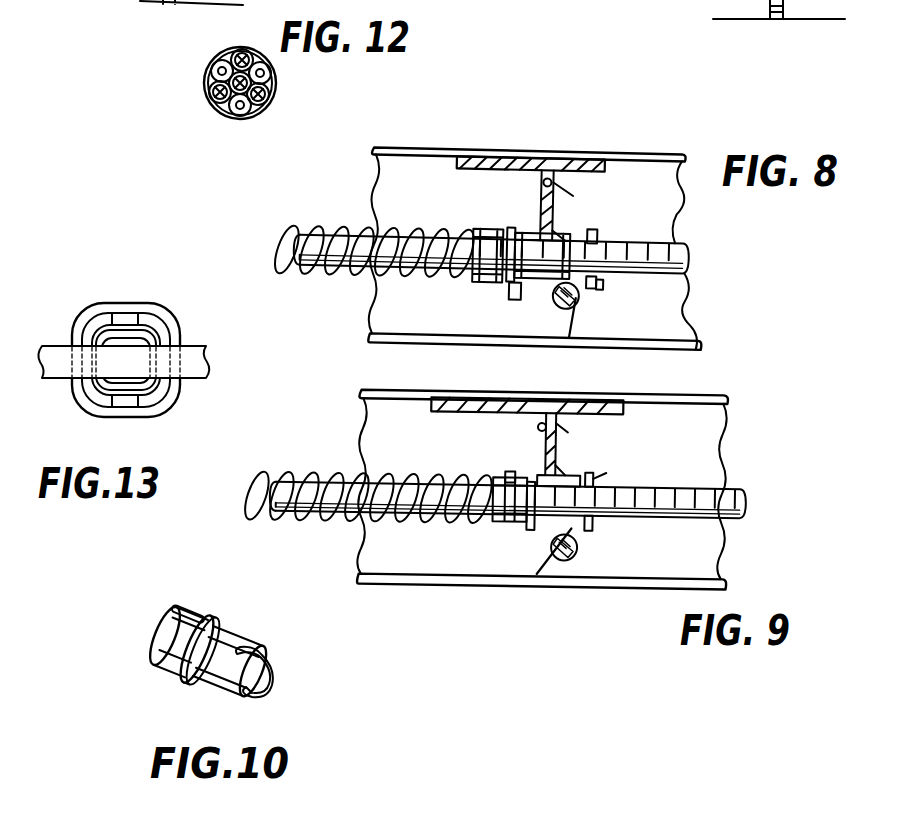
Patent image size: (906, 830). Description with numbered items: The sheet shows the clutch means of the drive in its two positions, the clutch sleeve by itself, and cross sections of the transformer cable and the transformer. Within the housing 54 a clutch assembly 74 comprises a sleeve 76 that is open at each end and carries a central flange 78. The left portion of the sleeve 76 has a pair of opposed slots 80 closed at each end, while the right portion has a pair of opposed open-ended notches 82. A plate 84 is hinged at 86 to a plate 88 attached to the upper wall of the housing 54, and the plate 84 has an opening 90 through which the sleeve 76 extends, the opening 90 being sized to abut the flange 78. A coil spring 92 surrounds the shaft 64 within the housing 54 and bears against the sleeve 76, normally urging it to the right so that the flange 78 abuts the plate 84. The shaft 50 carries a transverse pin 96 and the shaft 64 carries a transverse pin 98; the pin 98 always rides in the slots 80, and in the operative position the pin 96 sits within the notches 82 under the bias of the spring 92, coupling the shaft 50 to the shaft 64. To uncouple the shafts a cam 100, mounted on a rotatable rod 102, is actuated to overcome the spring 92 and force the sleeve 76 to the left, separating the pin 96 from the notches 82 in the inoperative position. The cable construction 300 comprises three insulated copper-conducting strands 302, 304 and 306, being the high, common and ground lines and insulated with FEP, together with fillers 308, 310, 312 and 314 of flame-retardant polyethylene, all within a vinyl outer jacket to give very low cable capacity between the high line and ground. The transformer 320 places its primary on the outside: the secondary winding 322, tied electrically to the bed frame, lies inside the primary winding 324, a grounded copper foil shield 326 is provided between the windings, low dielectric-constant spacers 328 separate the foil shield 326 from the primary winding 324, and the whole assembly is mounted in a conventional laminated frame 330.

In FIG. 8, the shaft 50 is at (653, 249).
In FIG. 9, the shaft 50 is at (678, 488).
In FIG. 8, the housing 54 is at (472, 152).
In FIG. 9, the housing 54 is at (652, 395).
In FIG. 8, the shaft 64 is at (439, 240).
In FIG. 9, the shaft 64 is at (422, 483).
In FIG. 8, the clutch assembly 74 is at (577, 213).
In FIG. 8, the sleeve 76 is at (568, 233).
In FIG. 10, the sleeve 76 is at (245, 632).
In FIG. 8, the central flange 78 is at (511, 228).
In FIG. 9, the central flange 78 is at (530, 532).
In FIG. 10, the central flange 78 is at (222, 620).
In FIG. 8, the opposed slots 80 is at (495, 215).
In FIG. 9, the opposed slots 80 is at (505, 526).
In FIG. 10, the opposed slots 80 is at (192, 606).
In FIG. 8, the open-ended notches 82 is at (597, 235).
In FIG. 9, the open-ended notches 82 is at (588, 472).
In FIG. 10, the open-ended notches 82 is at (260, 655).
In FIG. 8, the plate 84 is at (557, 202).
In FIG. 9, the plate 84 is at (560, 445).
In FIG. 8, the hinge 86 is at (546, 178).
In FIG. 9, the hinge 86 is at (545, 423).
In FIG. 8, the plate 88 is at (540, 158).
In FIG. 9, the plate 88 is at (540, 400).
In FIG. 8, the opening 90 is at (542, 182).
In FIG. 9, the opening 90 is at (559, 450).
In FIG. 8, the coil spring 92 is at (350, 229).
In FIG. 9, the coil spring 92 is at (394, 483).
In FIG. 8, the transverse pin 96 is at (604, 286).
In FIG. 9, the transverse pin 96 is at (595, 480).
In FIG. 8, the transverse pin 98 is at (514, 300).
In FIG. 9, the transverse pin 98 is at (510, 473).
In FIG. 8, the cam 100 is at (556, 306).
In FIG. 9, the cam 100 is at (570, 561).
In FIG. 8, the rod 102 is at (574, 320).
In FIG. 9, the rod 102 is at (548, 553).
In FIG. 12, the cable construction 300 is at (280, 73).
In FIG. 12, the insulated copper-conducting strand 302 is at (271, 84).
In FIG. 12, the insulated copper-conducting strand 304 is at (245, 117).
In FIG. 12, the insulated copper-conducting strand 306 is at (222, 60).
In FIG. 12, the filler 308 is at (252, 105).
In FIG. 12, the filler 310 is at (245, 49).
In FIG. 12, the filler 312 is at (266, 100).
In FIG. 12, the filler 314 is at (212, 100).
In FIG. 13, the transformer 320 is at (170, 304).
In FIG. 13, the secondary winding 322 is at (153, 334).
In FIG. 13, the primary winding 324 is at (172, 341).
In FIG. 13, the copper foil shield 326 is at (93, 395).
In FIG. 13, the spacers 328 is at (127, 318).
In FIG. 13, the laminated frame 330 is at (208, 362).